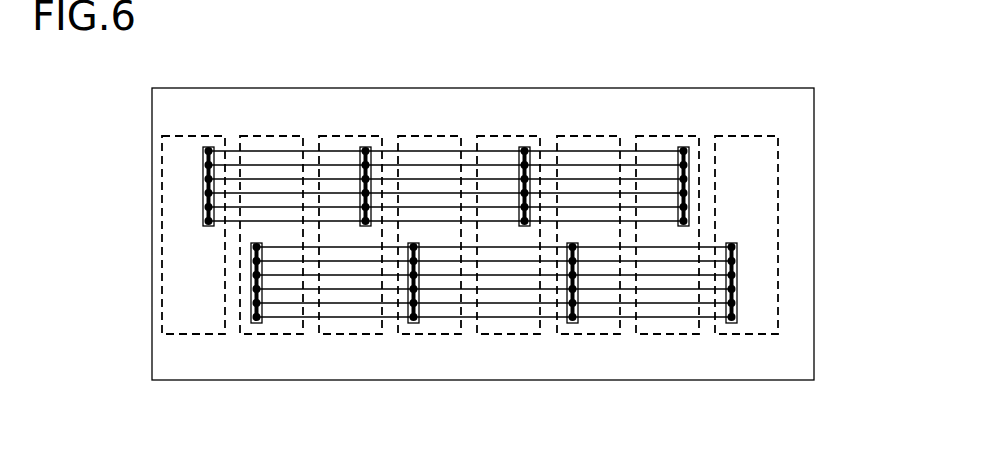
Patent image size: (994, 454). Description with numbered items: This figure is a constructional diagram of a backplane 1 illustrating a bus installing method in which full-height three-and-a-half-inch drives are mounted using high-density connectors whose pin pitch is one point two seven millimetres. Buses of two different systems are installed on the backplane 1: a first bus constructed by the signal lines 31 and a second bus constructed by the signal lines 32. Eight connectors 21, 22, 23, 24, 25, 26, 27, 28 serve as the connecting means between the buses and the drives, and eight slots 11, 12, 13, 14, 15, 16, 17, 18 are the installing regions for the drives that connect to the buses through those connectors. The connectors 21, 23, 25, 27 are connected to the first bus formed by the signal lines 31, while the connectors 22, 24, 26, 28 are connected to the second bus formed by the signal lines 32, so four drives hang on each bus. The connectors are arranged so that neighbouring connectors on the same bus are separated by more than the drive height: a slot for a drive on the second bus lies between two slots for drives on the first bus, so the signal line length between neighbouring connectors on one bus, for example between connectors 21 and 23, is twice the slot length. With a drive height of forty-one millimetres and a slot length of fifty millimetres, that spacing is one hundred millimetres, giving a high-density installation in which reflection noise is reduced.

The backplane 1 is at (814, 320).
The slot 11 is at (177, 334).
The slot 12 is at (272, 136).
The slot 13 is at (335, 334).
The slot 14 is at (432, 136).
The slot 15 is at (493, 334).
The slot 16 is at (588, 136).
The slot 17 is at (653, 334).
The slot 18 is at (748, 136).
The connector 21 is at (208, 146).
The connector 22 is at (256, 323).
The connector 23 is at (365, 146).
The connector 24 is at (413, 323).
The connector 25 is at (524, 146).
The connector 26 is at (572, 323).
The connector 27 is at (683, 146).
The connector 28 is at (731, 323).
The signal lines 31 is at (232, 219).
The signal lines 32 is at (705, 248).